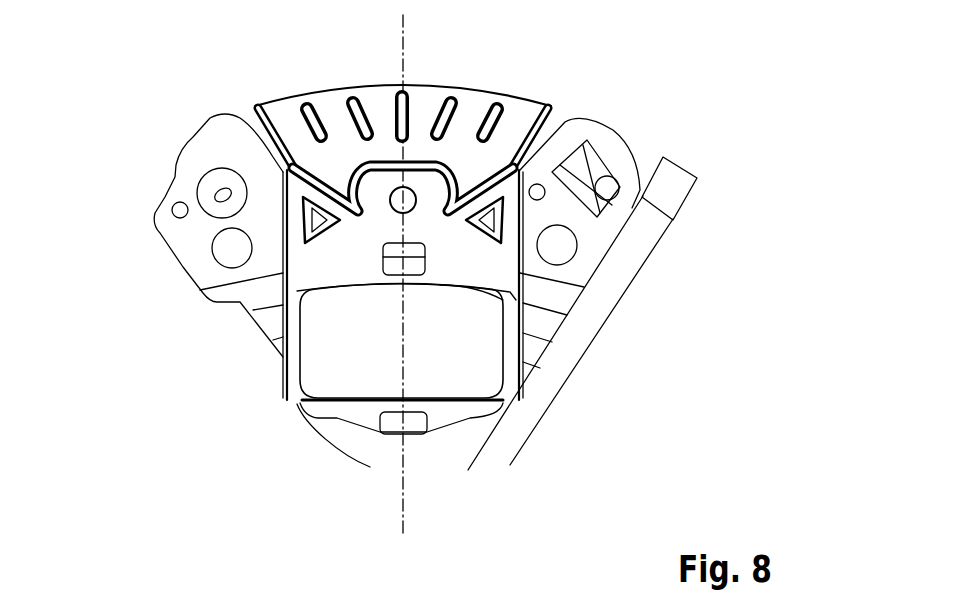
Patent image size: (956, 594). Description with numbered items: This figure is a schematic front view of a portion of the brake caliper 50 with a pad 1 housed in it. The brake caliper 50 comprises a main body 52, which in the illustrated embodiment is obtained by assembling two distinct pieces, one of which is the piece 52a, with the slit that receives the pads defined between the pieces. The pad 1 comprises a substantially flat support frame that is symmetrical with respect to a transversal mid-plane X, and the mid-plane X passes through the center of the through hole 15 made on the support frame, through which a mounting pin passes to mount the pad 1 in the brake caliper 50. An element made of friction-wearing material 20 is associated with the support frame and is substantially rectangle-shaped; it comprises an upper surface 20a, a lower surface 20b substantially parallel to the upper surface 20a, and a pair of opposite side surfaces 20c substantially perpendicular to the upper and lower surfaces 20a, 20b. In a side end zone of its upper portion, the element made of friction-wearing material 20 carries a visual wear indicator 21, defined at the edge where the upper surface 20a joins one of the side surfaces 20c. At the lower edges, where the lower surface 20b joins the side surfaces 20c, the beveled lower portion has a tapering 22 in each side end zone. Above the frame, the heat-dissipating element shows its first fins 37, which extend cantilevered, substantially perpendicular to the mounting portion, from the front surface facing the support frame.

The pad 1 is at (268, 82).
The transversal mid-plane X is at (402, 34).
The through hole 15 is at (390, 197).
The element made of friction-wearing material 20 is at (375, 366).
The upper surface 20a is at (453, 283).
The lower surface 20b is at (450, 418).
The side surfaces 20c is at (297, 368).
The visual wear indicator 21 is at (310, 290).
The tapering 22 is at (502, 395).
The first fins 37 is at (477, 105).
The brake caliper 50 is at (147, 88).
The main body 52 is at (727, 192).
The piece of the main body 52a is at (633, 262).